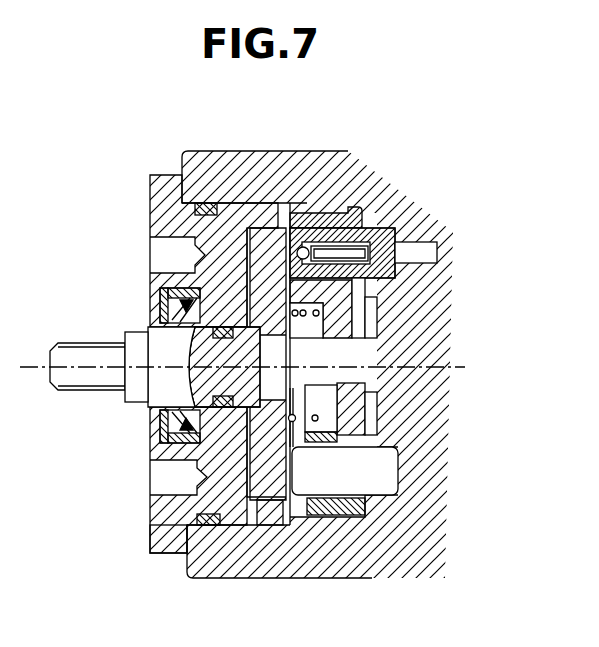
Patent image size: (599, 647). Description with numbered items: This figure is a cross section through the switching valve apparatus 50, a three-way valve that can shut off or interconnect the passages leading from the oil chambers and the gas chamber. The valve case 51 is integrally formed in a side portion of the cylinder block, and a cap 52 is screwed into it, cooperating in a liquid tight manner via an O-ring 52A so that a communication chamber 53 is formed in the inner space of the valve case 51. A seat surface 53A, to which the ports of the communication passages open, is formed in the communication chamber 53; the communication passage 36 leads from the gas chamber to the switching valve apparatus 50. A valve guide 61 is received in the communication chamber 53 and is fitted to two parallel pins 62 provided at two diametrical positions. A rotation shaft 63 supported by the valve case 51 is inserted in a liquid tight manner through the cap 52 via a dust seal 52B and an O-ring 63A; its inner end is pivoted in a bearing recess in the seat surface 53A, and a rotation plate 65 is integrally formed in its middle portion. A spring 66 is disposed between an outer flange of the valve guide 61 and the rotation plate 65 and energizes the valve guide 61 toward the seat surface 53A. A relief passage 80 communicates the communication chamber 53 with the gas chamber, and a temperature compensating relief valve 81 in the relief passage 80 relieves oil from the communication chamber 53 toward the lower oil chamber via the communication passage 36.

The switching valve apparatus 50 is at (84, 203).
The valve case 51 is at (292, 160).
The cap 52 is at (153, 517).
The O-ring 52A is at (153, 535).
The dust seal 52B is at (157, 292).
The communication chamber 53 is at (294, 408).
The seat surface 53A is at (350, 213).
The relief passage 80 is at (385, 232).
The temperature compensating relief valve 81 is at (305, 240).
The communication passage 36 is at (423, 253).
The parallel pin 62 is at (373, 280).
The valve guide 61 is at (335, 517).
The spring 66 is at (315, 421).
The rotation plate 65 is at (262, 447).
The rotation shaft 63 is at (70, 342).
The O-ring 63A is at (185, 335).